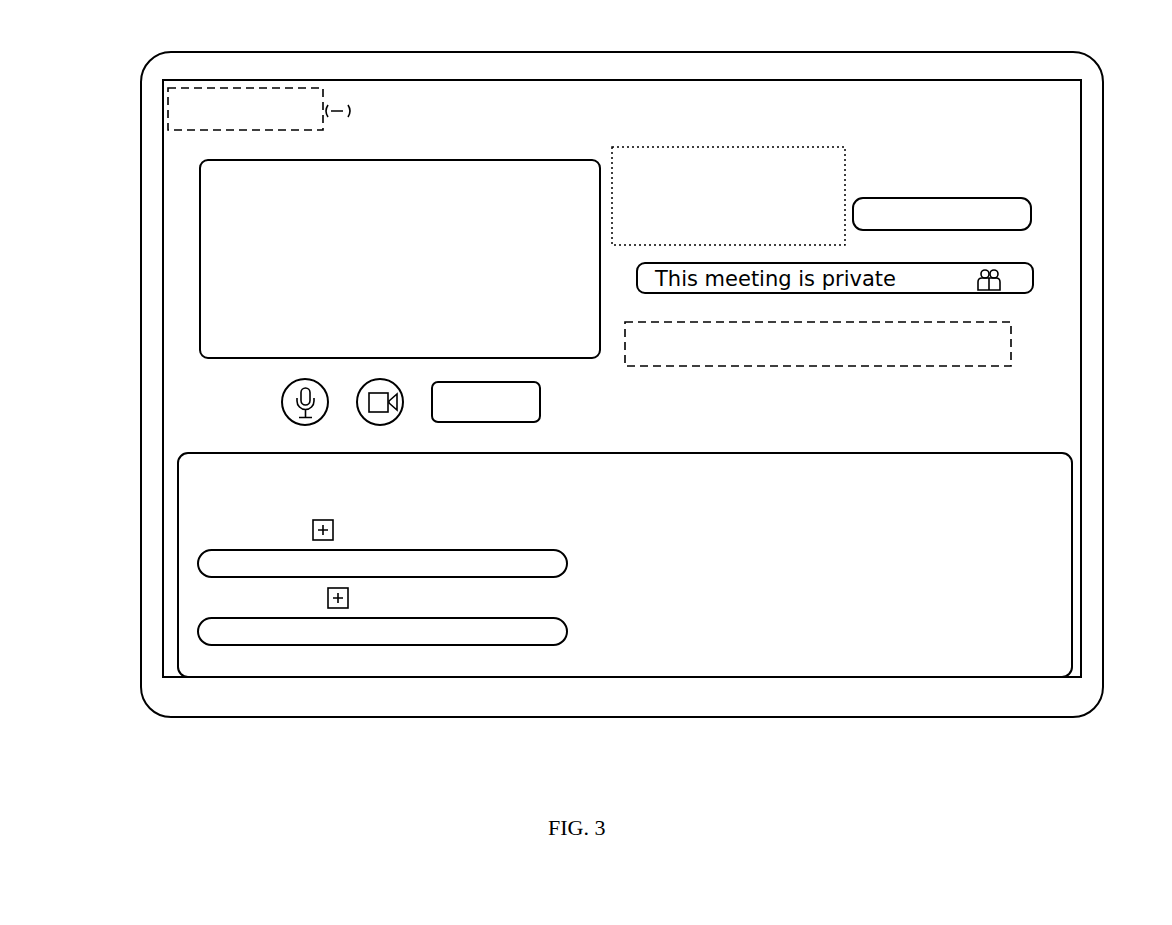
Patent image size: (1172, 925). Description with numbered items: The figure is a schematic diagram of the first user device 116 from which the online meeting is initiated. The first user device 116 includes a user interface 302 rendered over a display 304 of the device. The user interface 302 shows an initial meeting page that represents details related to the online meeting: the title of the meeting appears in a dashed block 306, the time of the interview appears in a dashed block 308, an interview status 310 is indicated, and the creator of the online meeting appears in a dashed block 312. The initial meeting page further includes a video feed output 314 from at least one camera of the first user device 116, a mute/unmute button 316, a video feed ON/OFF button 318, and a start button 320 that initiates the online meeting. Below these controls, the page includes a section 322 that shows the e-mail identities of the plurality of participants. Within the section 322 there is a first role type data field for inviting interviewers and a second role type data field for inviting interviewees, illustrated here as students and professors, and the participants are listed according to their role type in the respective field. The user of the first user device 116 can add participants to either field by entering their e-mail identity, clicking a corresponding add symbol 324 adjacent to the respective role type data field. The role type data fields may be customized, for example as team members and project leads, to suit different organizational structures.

The first user device 116 is at (1095, 63).
The user interface 302 is at (1080, 157).
The display 304 is at (1067, 255).
The dashed block 306 is at (283, 88).
The dashed block 308 is at (845, 167).
The interview status 310 is at (950, 197).
The dashed block 312 is at (908, 366).
The video feed output 314 is at (432, 160).
The mute/unmute button 316 is at (283, 402).
The video feed ON/OFF button 318 is at (398, 417).
The start button 320 is at (540, 397).
The section 322 is at (179, 530).
The add symbol 324 is at (347, 598).